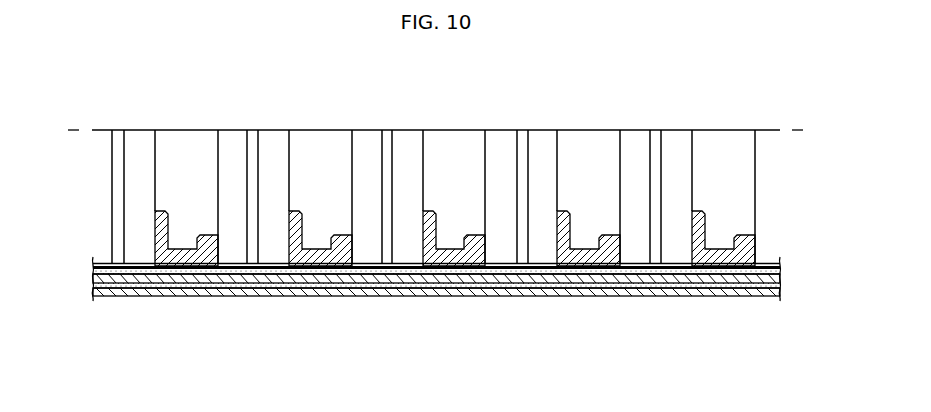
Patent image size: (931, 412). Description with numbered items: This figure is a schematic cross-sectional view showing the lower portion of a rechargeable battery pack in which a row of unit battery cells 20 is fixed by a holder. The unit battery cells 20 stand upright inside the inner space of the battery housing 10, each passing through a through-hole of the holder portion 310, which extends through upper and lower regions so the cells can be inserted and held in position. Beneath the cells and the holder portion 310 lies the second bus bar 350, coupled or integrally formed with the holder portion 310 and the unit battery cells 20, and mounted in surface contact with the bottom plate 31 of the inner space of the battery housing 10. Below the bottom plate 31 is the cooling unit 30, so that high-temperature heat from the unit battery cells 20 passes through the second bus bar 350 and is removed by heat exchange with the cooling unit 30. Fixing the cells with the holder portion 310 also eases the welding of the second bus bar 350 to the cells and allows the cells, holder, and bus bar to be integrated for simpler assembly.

The battery housing 10 is at (300, 292).
The unit battery cells 20 is at (186, 141).
The cooling unit 30 is at (436, 305).
The bottom plate 31 is at (229, 279).
The holder portion 310 is at (189, 258).
The second bus bar 350 is at (655, 269).